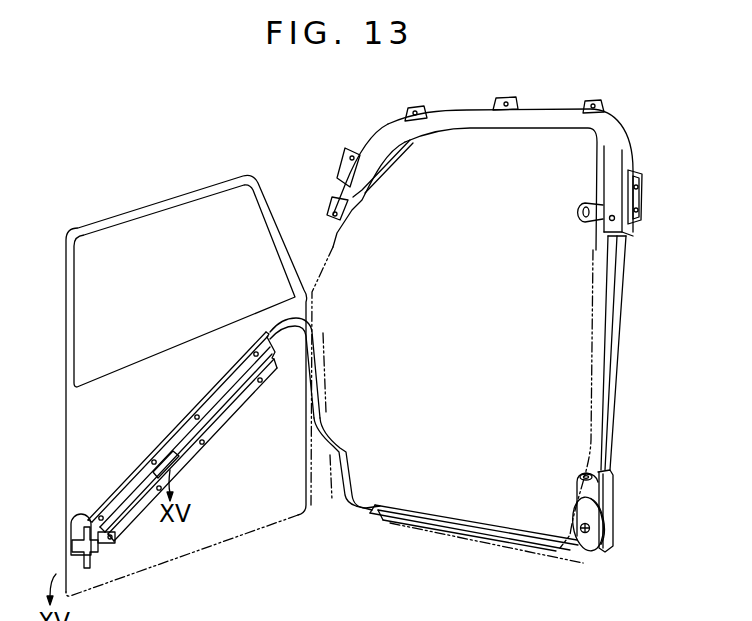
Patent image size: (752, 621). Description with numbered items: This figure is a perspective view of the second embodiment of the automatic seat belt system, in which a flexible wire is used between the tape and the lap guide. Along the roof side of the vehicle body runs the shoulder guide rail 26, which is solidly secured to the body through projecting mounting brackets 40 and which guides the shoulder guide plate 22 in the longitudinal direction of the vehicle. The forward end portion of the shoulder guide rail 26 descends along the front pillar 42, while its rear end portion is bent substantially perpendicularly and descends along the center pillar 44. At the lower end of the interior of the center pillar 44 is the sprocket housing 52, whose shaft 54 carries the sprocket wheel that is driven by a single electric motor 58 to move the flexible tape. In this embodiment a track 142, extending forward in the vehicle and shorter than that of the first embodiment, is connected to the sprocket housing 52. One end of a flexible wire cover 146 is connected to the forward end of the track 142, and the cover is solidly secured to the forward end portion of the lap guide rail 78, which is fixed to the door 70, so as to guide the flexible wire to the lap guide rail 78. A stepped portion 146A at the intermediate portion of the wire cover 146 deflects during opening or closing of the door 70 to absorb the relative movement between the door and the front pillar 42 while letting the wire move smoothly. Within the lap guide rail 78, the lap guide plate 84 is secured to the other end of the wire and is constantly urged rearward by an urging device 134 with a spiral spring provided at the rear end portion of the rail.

The shoulder guide plate 22 is at (587, 200).
The shoulder guide rail 26 is at (557, 113).
The mounting brackets 40 is at (424, 107).
The front pillar 42 is at (336, 237).
The center pillar 44 is at (592, 333).
The sprocket housing 52 is at (592, 540).
The shaft 54 is at (590, 537).
The electric motor 58 is at (578, 487).
The door 70 is at (232, 512).
The lap guide rail 78 is at (220, 423).
The lap guide plate 84 is at (114, 544).
The urging device 134 is at (86, 502).
The track 142 is at (500, 525).
The flexible wire cover 146 is at (345, 450).
The stepped portion 146A is at (323, 393).